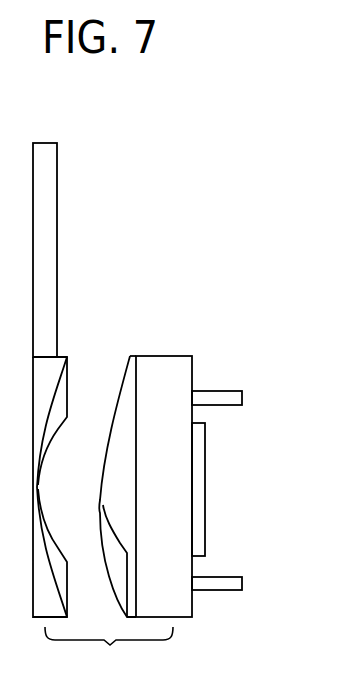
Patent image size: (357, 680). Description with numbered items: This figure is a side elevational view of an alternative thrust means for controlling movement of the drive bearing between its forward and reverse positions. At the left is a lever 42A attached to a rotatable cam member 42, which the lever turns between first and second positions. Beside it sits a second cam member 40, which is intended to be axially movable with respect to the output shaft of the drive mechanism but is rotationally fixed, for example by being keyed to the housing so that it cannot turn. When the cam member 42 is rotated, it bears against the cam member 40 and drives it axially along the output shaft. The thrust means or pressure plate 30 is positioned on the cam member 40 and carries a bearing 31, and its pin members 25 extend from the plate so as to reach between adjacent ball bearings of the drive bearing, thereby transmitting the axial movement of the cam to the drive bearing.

The lever 42A is at (66, 181).
The cam member 42 is at (63, 361).
The cam member 40 is at (140, 347).
The thrust means 30 is at (194, 346).
The pin members 25 is at (228, 391).
The bearing 31 is at (216, 463).